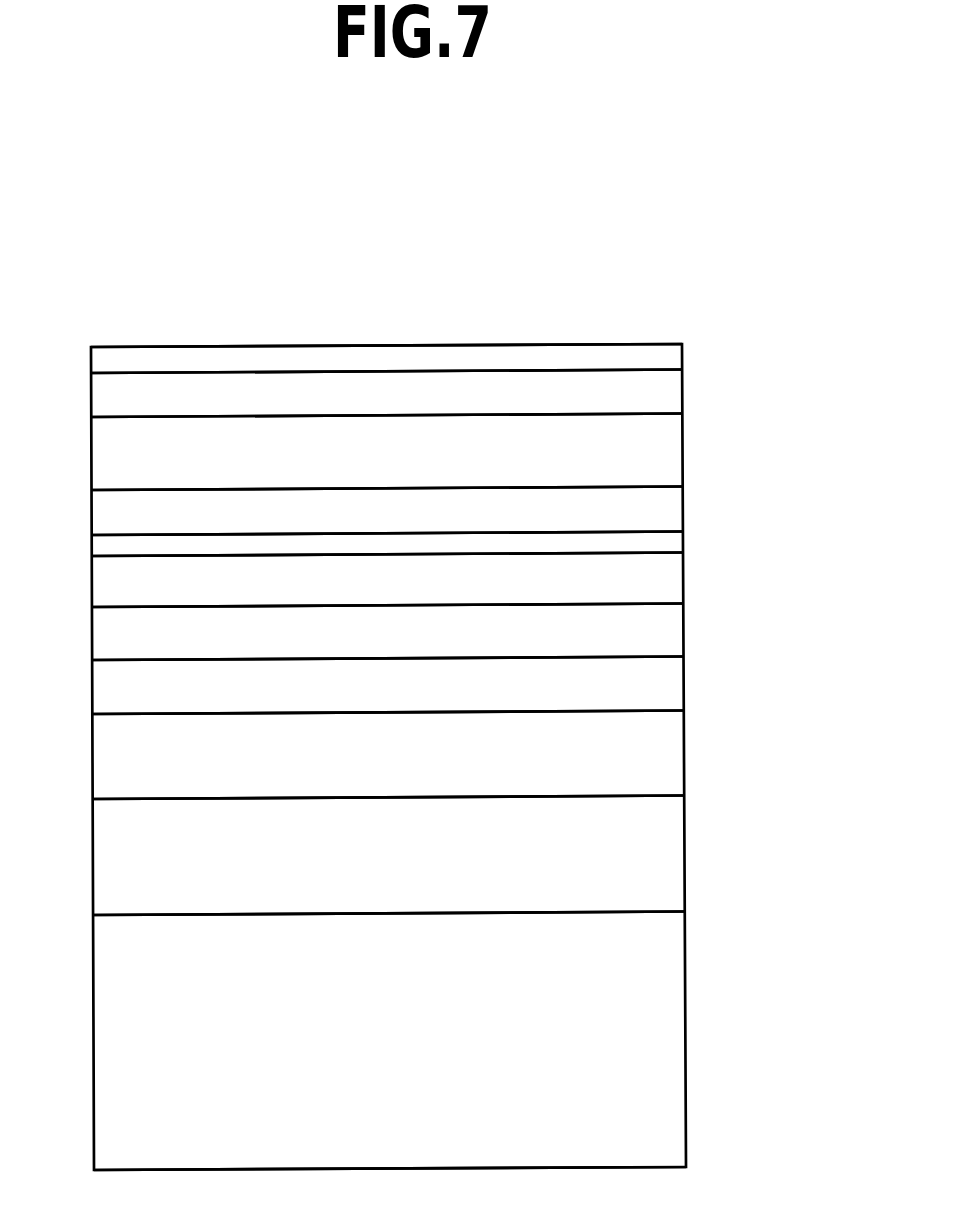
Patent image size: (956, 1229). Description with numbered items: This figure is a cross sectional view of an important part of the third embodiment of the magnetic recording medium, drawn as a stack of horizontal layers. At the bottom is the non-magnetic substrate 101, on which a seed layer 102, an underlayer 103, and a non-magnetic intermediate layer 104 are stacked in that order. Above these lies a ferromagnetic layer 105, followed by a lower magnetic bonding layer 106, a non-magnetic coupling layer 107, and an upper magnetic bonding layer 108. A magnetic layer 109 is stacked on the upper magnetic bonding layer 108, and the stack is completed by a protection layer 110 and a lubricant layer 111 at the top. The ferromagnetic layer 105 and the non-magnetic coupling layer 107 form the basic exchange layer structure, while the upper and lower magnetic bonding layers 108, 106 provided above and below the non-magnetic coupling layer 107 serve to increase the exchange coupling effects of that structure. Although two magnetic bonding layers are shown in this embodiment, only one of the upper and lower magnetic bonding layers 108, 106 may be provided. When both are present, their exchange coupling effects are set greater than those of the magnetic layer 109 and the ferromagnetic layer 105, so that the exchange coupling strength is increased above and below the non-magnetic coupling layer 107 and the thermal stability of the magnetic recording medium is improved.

The non-magnetic substrate 101 is at (702, 1027).
The seed layer 102 is at (700, 853).
The underlayer 103 is at (700, 750).
The non-magnetic intermediate layer 104 is at (700, 684).
The ferromagnetic layer 105 is at (700, 630).
The lower magnetic bonding layer 106 is at (700, 582).
The non-magnetic coupling layer 107 is at (700, 540).
The upper magnetic bonding layer 108 is at (700, 504).
The magnetic layer 109 is at (700, 448).
The protection layer 110 is at (700, 391).
The lubricant layer 111 is at (700, 356).